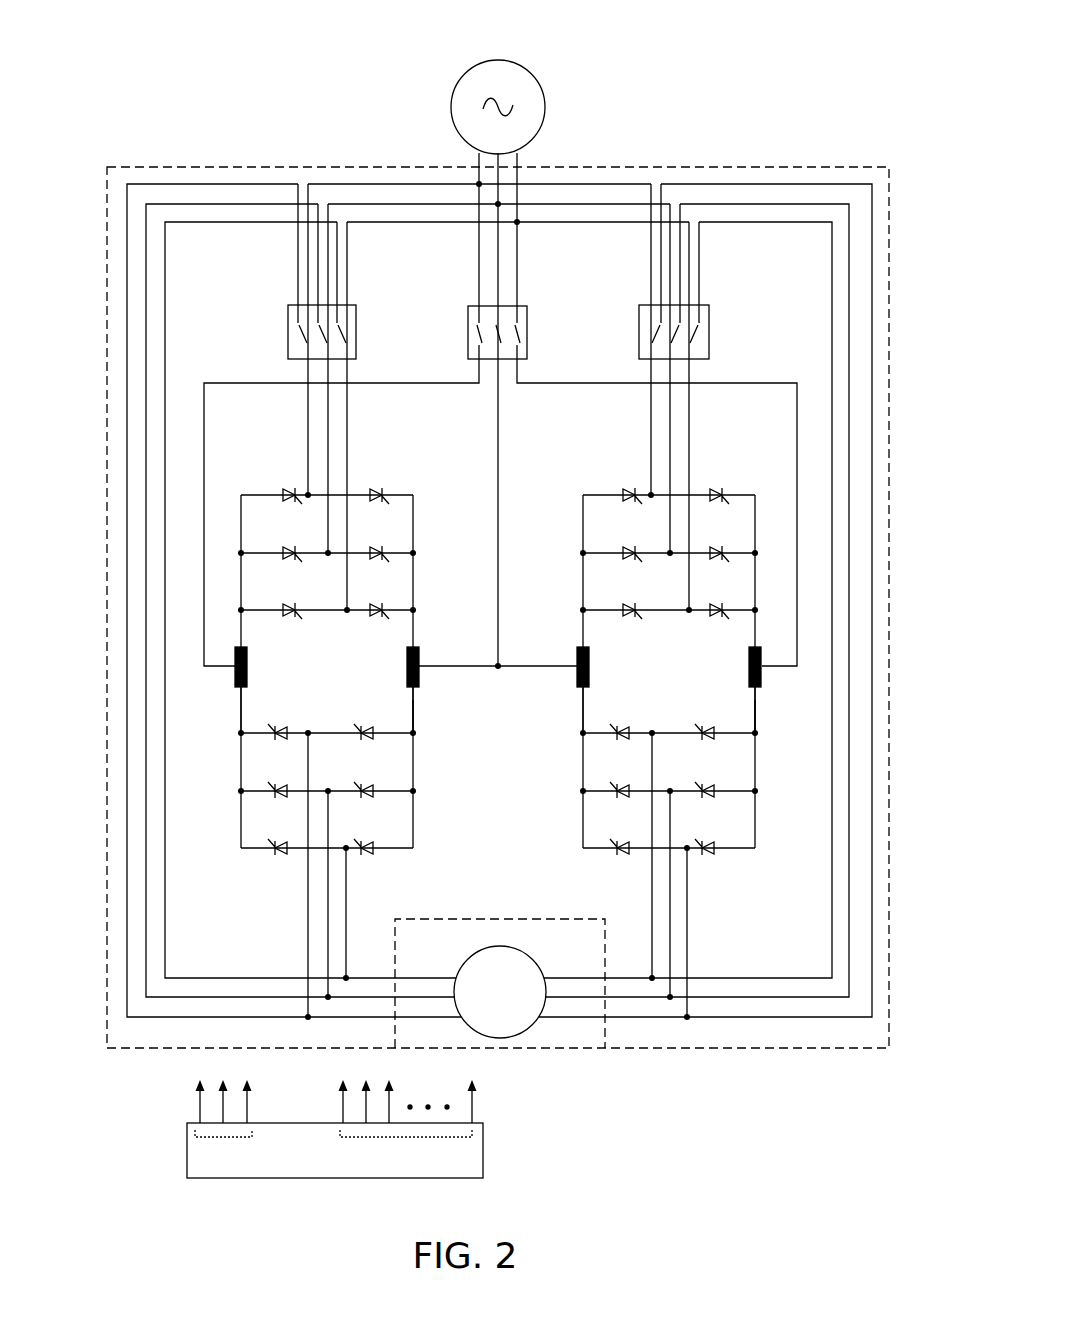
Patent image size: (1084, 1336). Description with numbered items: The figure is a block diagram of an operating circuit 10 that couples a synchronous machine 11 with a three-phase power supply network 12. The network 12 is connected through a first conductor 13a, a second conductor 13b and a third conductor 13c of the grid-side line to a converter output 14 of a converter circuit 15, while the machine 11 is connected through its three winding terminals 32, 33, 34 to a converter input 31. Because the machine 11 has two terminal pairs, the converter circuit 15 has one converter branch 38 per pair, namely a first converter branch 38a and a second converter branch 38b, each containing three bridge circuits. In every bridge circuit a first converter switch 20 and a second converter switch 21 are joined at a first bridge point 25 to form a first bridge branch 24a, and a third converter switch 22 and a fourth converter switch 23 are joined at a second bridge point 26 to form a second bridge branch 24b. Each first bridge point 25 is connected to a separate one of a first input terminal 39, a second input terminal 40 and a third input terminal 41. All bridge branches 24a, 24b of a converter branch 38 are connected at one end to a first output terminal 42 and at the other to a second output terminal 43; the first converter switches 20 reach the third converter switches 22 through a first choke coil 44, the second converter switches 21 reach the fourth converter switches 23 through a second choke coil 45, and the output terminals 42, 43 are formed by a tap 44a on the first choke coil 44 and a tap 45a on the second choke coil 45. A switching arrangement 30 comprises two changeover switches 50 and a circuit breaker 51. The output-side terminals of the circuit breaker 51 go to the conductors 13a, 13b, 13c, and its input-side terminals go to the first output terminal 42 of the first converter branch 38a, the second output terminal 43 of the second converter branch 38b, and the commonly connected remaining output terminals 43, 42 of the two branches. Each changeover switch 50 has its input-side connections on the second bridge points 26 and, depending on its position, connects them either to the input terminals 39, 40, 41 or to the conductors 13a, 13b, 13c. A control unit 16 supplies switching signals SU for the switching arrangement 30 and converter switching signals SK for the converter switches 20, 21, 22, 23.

The operating circuit 10 is at (726, 46).
The synchronous machine 11 is at (500, 1040).
The power supply network 12 is at (498, 60).
The first conductor 13a is at (478, 158).
The second conductor 13b is at (503, 150).
The third conductor 13c is at (520, 158).
The converter output 14 is at (466, 175).
The converter circuit 15 is at (203, 165).
The control unit 16 is at (302, 1178).
The first converter switch 20 is at (280, 725).
The second converter switch 21 is at (366, 725).
The third converter switch 22 is at (285, 560).
The fourth converter switch 23 is at (383, 560).
The first bridge branch 24a is at (428, 742).
The second bridge branch 24b is at (430, 493).
The first bridge point 25 is at (308, 727).
The second bridge point 26 is at (306, 492).
The switching arrangement 30 is at (501, 271).
The converter input 31 is at (415, 960).
The first winding terminal 32 is at (455, 975).
The second winding terminal 33 is at (455, 1002).
The third winding terminal 34 is at (455, 1022).
The converter branch 38 is at (511, 623).
The first converter branch 38a is at (402, 460).
The second converter branch 38b is at (722, 460).
The first input terminal 39 is at (304, 900).
The second input terminal 40 is at (325, 935).
The third input terminal 41 is at (343, 960).
The first output terminal 42 is at (210, 666).
The second output terminal 43 is at (416, 670).
The first choke coil 44 is at (248, 668).
The tap 44a is at (238, 674).
The second choke coil 45 is at (406, 666).
The tap 45a is at (420, 660).
The changeover switch 50 is at (288, 332).
The circuit breaker 51 is at (527, 332).